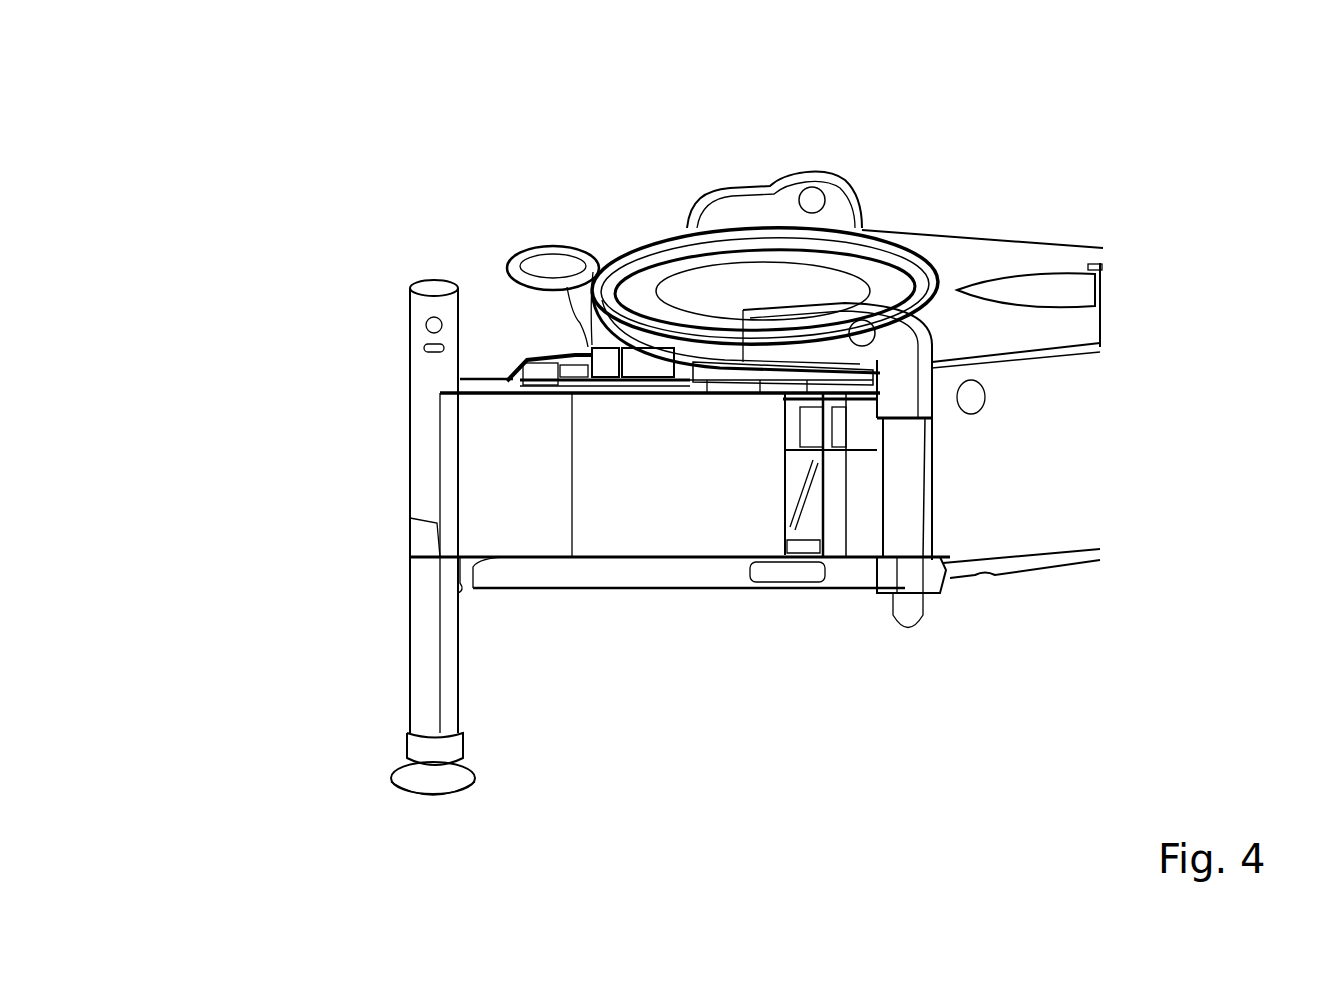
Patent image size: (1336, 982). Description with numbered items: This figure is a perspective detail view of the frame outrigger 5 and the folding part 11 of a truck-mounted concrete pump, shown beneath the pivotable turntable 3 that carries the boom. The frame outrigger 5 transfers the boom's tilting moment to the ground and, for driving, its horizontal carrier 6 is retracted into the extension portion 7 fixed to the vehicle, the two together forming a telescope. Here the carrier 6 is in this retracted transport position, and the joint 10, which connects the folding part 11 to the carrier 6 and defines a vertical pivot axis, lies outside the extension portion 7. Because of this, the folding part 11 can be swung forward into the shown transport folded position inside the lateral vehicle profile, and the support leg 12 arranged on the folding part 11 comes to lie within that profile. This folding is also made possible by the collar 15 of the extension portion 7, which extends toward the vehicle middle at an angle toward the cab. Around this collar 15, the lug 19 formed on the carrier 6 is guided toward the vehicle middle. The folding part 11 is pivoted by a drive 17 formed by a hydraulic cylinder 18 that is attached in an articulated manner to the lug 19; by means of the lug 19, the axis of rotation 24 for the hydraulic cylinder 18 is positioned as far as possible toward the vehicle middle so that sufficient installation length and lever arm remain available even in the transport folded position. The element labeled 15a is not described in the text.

The turntable 3 is at (701, 260).
The frame outrigger 5 is at (965, 262).
The carrier 6 is at (868, 513).
The extension portion 7 is at (1030, 428).
The joint 10 is at (807, 483).
The folding part 11 is at (677, 493).
The support leg 12 is at (430, 665).
The collar 15 is at (898, 392).
The lug 15a is at (788, 202).
The drive 17 is at (628, 400).
The hydraulic cylinder 18 is at (608, 348).
The lug 19 is at (716, 352).
The axis of rotation 24 is at (688, 345).